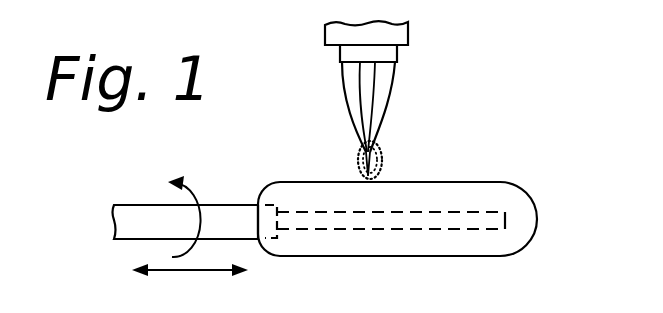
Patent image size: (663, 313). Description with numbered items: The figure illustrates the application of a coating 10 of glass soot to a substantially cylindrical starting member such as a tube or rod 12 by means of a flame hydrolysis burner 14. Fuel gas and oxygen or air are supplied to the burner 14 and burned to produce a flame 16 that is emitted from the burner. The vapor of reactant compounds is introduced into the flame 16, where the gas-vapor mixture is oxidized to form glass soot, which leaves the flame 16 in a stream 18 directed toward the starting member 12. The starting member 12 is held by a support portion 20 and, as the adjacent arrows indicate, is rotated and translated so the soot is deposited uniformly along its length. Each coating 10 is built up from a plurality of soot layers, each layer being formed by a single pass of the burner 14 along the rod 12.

The coating 10 is at (510, 190).
The starting member 12 is at (389, 229).
The flame hydrolysis burner 14 is at (397, 33).
The flame 16 is at (382, 92).
The stream 18 is at (372, 163).
The support portion 20 is at (138, 213).